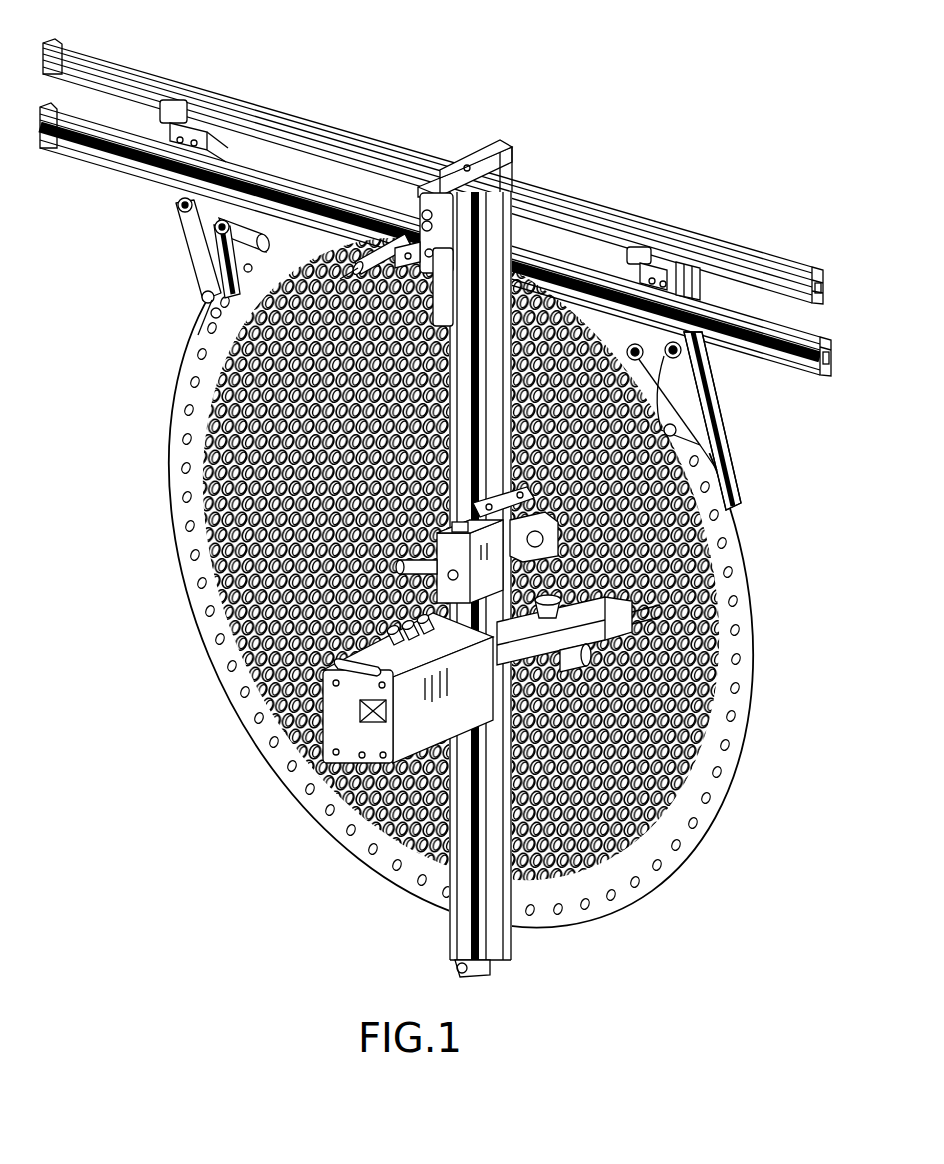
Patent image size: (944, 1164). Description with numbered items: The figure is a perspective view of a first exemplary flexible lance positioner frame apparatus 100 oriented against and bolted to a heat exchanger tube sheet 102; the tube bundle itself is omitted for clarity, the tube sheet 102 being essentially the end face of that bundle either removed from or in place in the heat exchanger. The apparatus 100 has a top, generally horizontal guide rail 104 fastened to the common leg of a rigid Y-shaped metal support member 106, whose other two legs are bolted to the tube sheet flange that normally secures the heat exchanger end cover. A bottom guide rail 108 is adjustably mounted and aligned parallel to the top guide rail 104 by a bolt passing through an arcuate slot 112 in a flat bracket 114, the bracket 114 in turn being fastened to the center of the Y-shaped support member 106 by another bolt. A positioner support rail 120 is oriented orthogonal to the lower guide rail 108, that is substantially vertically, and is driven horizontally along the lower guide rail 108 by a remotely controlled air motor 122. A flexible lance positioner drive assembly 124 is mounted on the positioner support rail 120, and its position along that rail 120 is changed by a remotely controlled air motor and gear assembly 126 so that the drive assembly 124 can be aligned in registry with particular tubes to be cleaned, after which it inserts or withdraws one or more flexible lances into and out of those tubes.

The frame apparatus 100 is at (448, 508).
The tube sheet 102 is at (690, 812).
The top guide rail 104 is at (760, 247).
The Y-shaped support member 106 is at (724, 398).
The bottom guide rail 108 is at (808, 337).
The arcuate slot 112 is at (216, 231).
The flat bracket 114 is at (156, 194).
The positioner support rail 120 is at (462, 432).
The air motor 122 is at (383, 247).
The flexible lance positioner drive assembly 124 is at (318, 705).
The air motor and gear assembly 126 is at (395, 575).